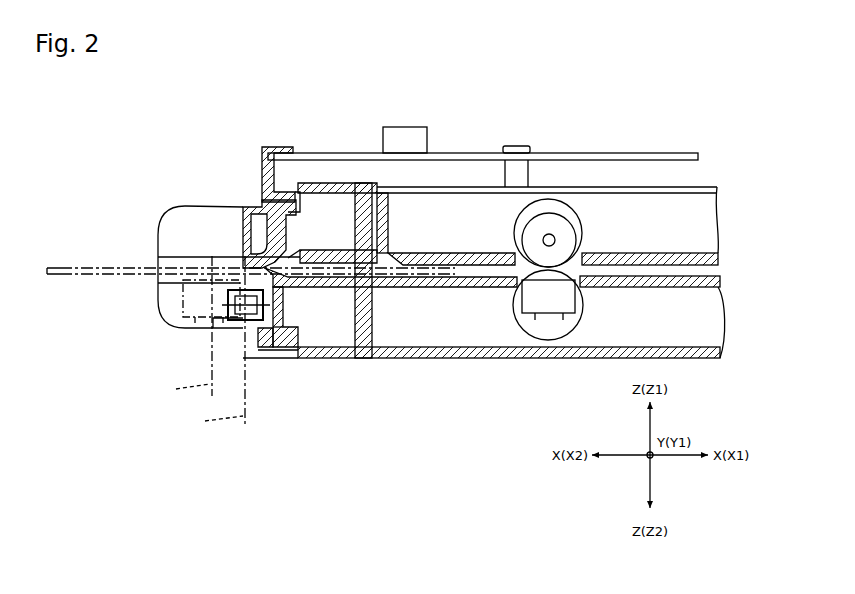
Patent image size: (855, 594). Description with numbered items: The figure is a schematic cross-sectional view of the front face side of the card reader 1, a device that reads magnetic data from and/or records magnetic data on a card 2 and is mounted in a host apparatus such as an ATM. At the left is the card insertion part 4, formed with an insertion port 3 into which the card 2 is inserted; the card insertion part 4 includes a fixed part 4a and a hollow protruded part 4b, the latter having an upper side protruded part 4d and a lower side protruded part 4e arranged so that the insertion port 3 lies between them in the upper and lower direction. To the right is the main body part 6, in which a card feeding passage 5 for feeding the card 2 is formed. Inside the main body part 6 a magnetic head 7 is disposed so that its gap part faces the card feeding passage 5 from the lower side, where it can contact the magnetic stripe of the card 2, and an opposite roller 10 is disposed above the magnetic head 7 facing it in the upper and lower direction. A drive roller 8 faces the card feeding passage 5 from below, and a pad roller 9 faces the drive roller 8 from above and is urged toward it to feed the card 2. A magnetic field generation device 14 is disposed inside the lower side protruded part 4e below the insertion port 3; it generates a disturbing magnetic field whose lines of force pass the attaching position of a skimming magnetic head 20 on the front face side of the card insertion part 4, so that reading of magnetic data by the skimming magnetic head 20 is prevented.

The card reader 1 is at (613, 70).
The card 2 is at (57, 277).
The insertion port 3 is at (153, 263).
The card insertion part 4 is at (315, 150).
The fixed part 4a is at (278, 147).
The protruded part 4b is at (205, 205).
The upper side protruded part 4d is at (282, 214).
The lower side protruded part 4e is at (192, 330).
The card feeding passage 5 is at (484, 262).
The main body part 6 is at (648, 187).
The magnetic head 7 is at (577, 298).
The drive roller 8 is at (583, 322).
The pad roller 9 is at (583, 218).
The opposite roller 10 is at (579, 239).
The magnetic field generation device 14 is at (248, 325).
The skimming magnetic head 20 is at (182, 312).